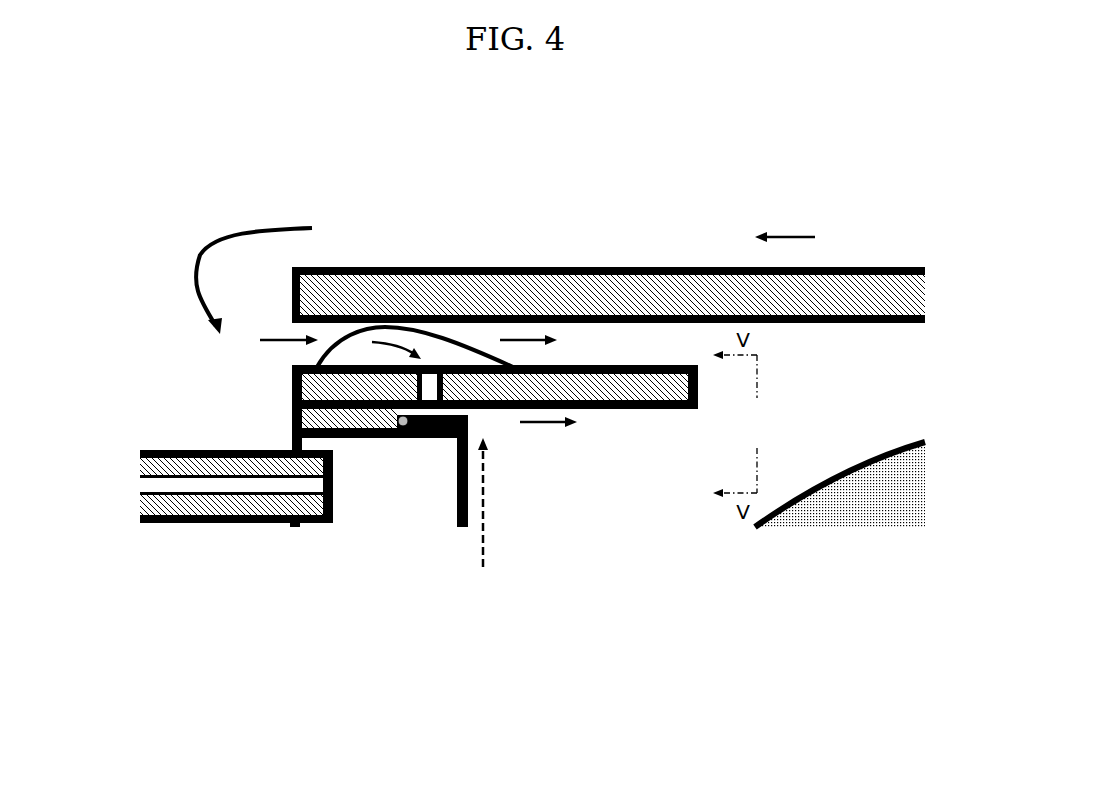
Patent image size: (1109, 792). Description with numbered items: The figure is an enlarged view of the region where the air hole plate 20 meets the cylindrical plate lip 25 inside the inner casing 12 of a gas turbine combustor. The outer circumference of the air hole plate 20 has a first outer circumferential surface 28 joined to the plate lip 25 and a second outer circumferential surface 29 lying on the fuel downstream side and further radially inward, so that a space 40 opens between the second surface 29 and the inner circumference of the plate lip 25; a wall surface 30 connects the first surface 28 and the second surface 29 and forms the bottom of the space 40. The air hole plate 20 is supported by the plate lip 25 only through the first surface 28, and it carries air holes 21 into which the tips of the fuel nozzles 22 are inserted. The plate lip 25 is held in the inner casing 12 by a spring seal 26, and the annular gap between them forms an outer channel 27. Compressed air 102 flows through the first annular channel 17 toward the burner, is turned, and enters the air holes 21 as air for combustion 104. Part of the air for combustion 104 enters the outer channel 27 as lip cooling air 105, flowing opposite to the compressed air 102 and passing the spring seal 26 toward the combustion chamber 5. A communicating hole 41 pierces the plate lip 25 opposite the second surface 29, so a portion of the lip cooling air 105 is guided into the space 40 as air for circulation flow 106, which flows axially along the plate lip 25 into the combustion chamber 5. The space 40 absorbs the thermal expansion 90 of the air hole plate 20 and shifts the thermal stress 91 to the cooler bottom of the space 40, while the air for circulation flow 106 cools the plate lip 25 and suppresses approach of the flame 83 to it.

The air for combustion 104 is at (232, 228).
The first outer circumferential surface 28 is at (350, 380).
The communicating hole 41 is at (430, 385).
The second outer circumferential surface 29 is at (445, 363).
The spring seal 26 is at (495, 272).
The inner casing 12 is at (583, 268).
The outer channel 27 is at (660, 273).
The compressed air 102 is at (787, 237).
The first annular channel 17 is at (854, 248).
The lip cooling air 105 is at (565, 343).
The combustion chamber 5 is at (850, 358).
The flame 83 is at (808, 495).
The air hole plate 20 is at (290, 427).
The fuel nozzle 22 is at (217, 523).
The air hole 21 is at (360, 440).
The thermal stress 91 is at (393, 440).
The wall surface 30 is at (430, 440).
The space 40 is at (472, 415).
The air for circulation flow 106 is at (560, 424).
The thermal expansion 90 is at (487, 543).
The plate lip 25 is at (685, 410).